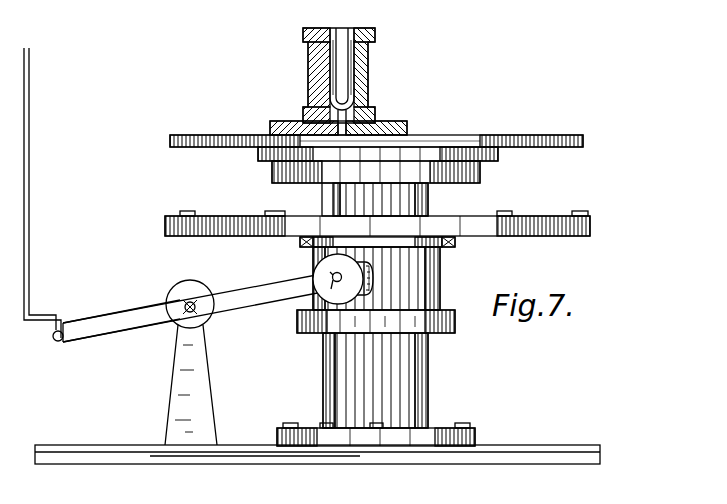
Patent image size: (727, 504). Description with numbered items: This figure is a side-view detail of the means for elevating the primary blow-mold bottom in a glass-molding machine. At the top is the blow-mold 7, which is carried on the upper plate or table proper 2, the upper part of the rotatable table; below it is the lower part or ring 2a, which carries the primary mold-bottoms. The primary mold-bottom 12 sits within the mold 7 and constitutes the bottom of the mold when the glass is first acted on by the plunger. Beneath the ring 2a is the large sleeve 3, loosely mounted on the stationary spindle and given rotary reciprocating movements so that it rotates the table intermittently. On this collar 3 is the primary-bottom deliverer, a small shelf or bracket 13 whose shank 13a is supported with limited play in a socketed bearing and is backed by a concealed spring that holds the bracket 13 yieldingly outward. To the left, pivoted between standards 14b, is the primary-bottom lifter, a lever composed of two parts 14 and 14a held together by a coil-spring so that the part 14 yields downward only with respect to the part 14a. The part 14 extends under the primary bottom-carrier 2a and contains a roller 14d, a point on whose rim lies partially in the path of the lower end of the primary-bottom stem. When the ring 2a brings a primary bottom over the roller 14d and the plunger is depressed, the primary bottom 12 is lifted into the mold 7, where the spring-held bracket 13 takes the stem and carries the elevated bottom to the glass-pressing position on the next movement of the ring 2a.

The upper plate or table proper 2 is at (583, 141).
The lower part or ring 2a is at (590, 228).
The sleeve 3 is at (418, 270).
The blow-mold 7 is at (358, 98).
The primary mold-bottom 12 is at (344, 80).
The shelf or bracket 13 is at (328, 250).
The shank 13a is at (373, 288).
The lever part 14 is at (242, 301).
The lever part 14a is at (115, 326).
The standards 14b is at (200, 403).
The roller 14d is at (326, 312).